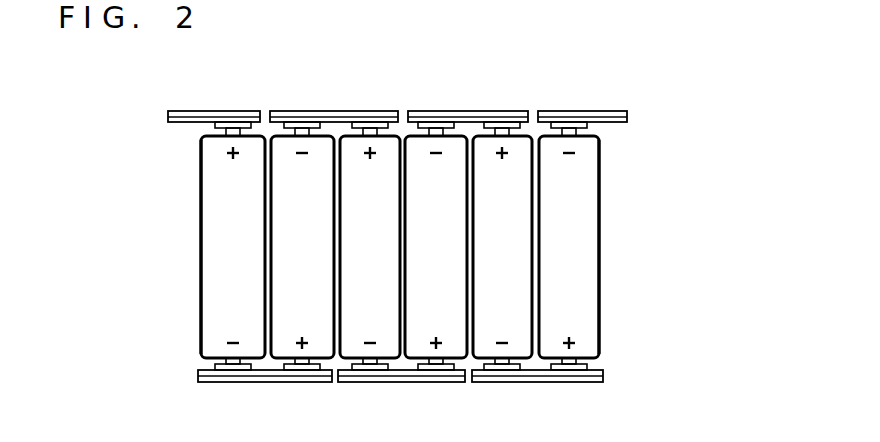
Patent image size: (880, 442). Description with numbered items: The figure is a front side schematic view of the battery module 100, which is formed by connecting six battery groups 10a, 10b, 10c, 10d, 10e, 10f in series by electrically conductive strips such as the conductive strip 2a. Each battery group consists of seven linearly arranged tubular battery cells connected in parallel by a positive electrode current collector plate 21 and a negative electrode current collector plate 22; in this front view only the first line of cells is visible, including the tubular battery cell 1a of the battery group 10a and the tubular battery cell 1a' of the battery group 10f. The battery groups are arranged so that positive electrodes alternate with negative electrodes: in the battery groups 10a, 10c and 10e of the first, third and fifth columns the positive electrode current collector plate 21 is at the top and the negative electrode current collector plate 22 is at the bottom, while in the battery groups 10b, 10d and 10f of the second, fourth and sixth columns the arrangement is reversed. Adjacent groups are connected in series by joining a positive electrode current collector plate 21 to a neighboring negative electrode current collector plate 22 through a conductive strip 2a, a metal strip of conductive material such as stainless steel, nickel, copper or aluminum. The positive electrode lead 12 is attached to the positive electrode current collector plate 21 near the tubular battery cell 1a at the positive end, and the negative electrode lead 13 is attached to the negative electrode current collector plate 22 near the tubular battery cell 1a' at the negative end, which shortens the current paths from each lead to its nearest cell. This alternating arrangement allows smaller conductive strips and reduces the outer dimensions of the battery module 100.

The battery module 100 is at (760, 248).
The battery group 10a is at (233, 246).
The battery group 10b is at (302, 246).
The battery group 10c is at (370, 246).
The battery group 10d is at (436, 246).
The battery group 10e is at (502, 246).
The battery group 10f is at (569, 246).
The positive electrode lead 12 is at (173, 113).
The negative electrode lead 13 is at (617, 112).
The conductive strip 2a is at (322, 110).
The negative electrode current collector plate 22 is at (272, 118).
The positive electrode current collector plate 21 is at (205, 125).
The tubular battery cell 1a is at (171, 247).
The tubular battery cell 1a' is at (621, 247).